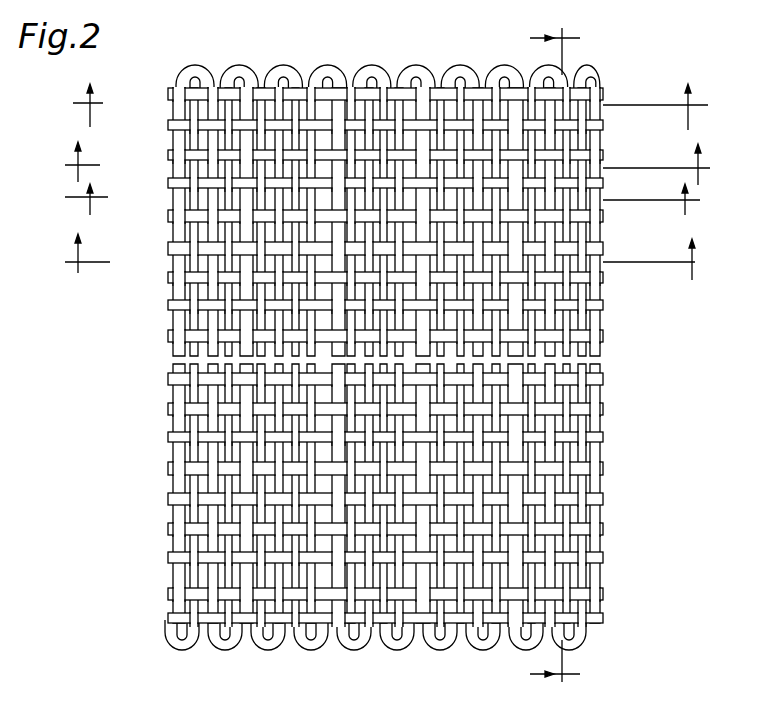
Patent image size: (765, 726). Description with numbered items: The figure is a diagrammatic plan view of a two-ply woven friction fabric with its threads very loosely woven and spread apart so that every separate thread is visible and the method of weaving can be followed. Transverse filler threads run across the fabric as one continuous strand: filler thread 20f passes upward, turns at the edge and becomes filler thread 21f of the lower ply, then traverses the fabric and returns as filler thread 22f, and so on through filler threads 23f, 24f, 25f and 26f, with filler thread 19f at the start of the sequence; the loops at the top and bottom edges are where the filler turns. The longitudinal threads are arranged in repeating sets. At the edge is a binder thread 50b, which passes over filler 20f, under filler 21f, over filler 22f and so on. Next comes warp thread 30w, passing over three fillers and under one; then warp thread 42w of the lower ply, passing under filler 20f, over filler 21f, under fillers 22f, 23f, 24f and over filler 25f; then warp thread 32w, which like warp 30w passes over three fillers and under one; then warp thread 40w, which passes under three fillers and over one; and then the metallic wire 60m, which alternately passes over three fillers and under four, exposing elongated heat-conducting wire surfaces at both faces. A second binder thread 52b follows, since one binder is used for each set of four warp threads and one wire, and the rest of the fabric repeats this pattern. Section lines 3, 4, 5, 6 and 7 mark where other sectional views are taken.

The filler thread 19f is at (193, 65).
The filler thread 20f is at (237, 65).
The filler thread 21f is at (282, 65).
The filler thread 22f is at (337, 65).
The filler thread 23f is at (433, 65).
The filler thread 24f is at (408, 65).
The filler thread 25f is at (328, 652).
The filler thread 26f is at (365, 652).
The binder thread 50b is at (621, 618).
The warp thread 30w is at (621, 594).
The warp thread 42w is at (621, 557).
The warp thread 32w is at (621, 529).
The warp thread 40w is at (621, 499).
The metallic wire 60m is at (621, 468).
The binder thread 52b is at (621, 437).
The section line 3 is at (381, 204).
The section line 4 is at (391, 164).
The section line 5 is at (392, 107).
The section line 6 is at (381, 260).
The section line 7 is at (555, 356).